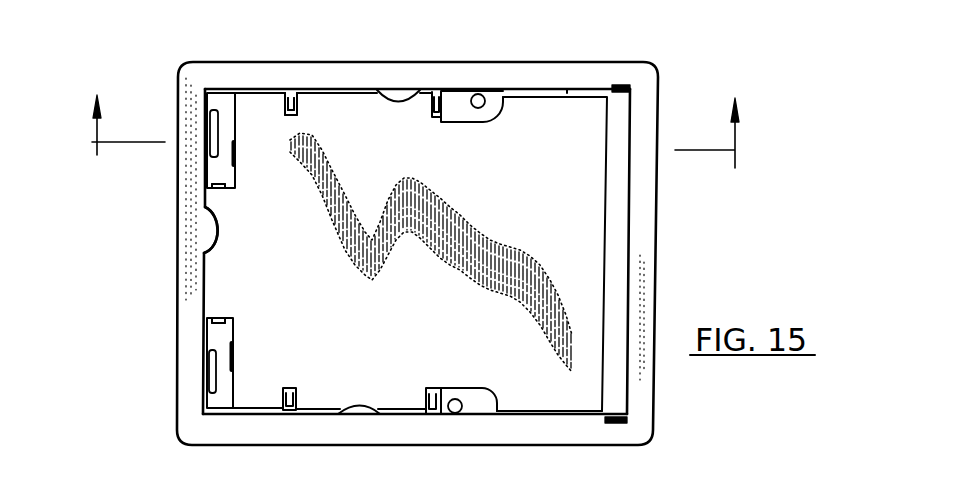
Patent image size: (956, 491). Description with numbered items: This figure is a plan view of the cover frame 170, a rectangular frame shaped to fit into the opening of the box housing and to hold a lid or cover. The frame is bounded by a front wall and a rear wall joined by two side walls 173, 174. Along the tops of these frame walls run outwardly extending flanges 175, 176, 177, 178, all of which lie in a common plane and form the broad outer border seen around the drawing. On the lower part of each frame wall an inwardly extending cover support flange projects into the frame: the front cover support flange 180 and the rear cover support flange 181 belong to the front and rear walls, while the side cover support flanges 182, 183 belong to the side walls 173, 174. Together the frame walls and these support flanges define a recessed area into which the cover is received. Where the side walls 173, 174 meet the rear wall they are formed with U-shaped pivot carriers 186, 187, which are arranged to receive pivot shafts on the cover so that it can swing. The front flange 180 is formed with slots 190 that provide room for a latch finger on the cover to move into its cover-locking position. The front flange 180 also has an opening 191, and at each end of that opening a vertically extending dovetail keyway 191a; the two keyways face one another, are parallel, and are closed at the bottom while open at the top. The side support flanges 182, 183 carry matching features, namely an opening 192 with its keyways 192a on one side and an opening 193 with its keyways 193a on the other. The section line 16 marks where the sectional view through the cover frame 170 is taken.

The section line 16 is at (418, 131).
The cover frame 170 is at (163, 192).
The side wall 173 is at (450, 122).
The side wall 174 is at (441, 388).
The outwardly extending flange 175 is at (187, 273).
The outwardly extending flange 176 is at (638, 266).
The outwardly extending flange 177 is at (320, 423).
The outwardly extending flange 178 is at (363, 75).
The front cover support flange 180 is at (223, 168).
The rear cover support flange 181 is at (607, 235).
The side cover support flange 182 is at (266, 91).
The side cover support flange 183 is at (257, 414).
The U-shaped pivot carrier 186 is at (630, 92).
The U-shaped pivot carrier 187 is at (615, 418).
The slot 190 is at (212, 382).
The opening 191 is at (203, 249).
The dovetail keyway 191a is at (219, 318).
The opening 192 is at (376, 412).
The dovetail keyway 192a is at (420, 399).
The opening 193 is at (423, 89).
The dovetail keyway 193a is at (430, 100).